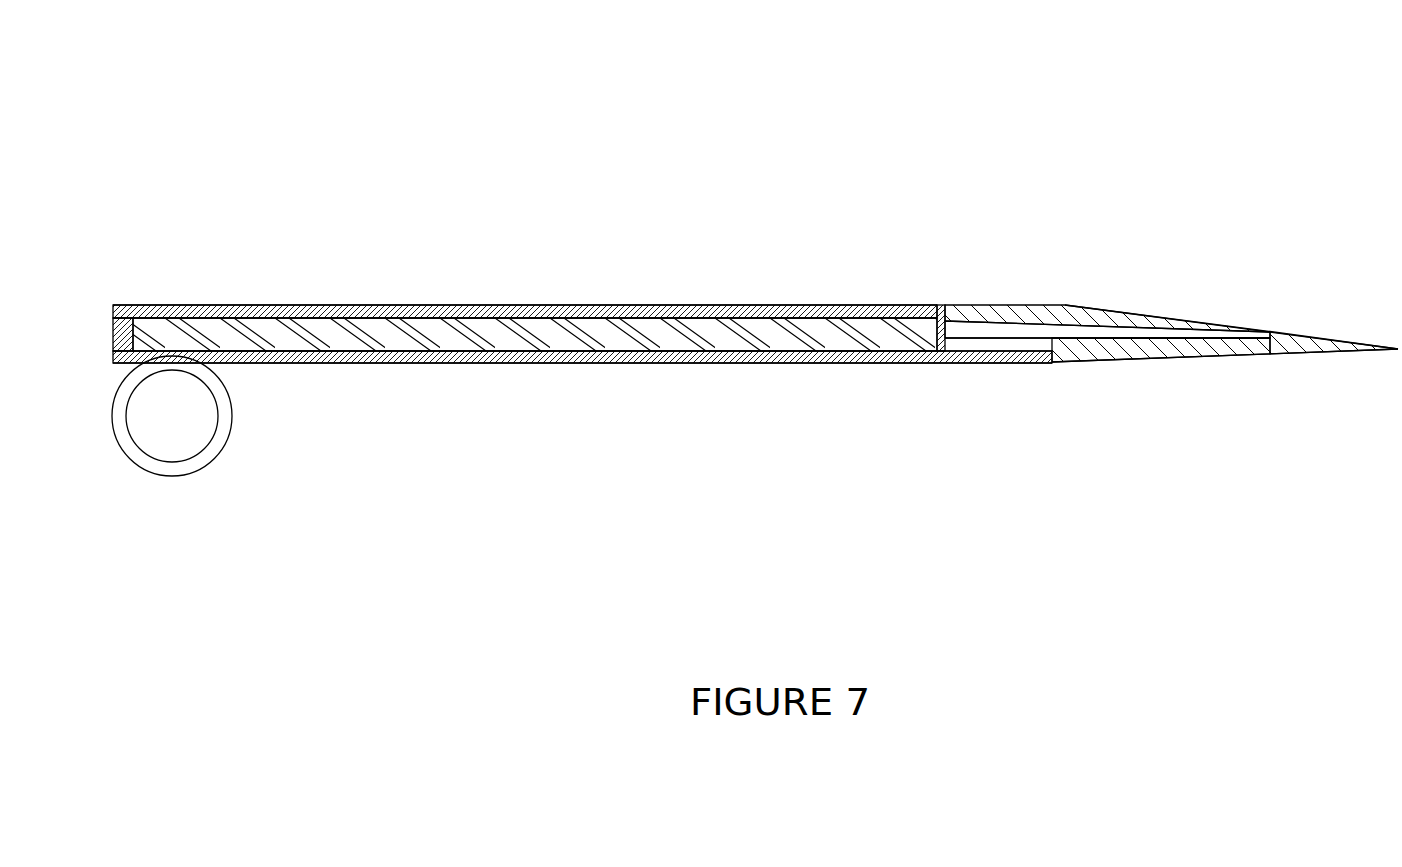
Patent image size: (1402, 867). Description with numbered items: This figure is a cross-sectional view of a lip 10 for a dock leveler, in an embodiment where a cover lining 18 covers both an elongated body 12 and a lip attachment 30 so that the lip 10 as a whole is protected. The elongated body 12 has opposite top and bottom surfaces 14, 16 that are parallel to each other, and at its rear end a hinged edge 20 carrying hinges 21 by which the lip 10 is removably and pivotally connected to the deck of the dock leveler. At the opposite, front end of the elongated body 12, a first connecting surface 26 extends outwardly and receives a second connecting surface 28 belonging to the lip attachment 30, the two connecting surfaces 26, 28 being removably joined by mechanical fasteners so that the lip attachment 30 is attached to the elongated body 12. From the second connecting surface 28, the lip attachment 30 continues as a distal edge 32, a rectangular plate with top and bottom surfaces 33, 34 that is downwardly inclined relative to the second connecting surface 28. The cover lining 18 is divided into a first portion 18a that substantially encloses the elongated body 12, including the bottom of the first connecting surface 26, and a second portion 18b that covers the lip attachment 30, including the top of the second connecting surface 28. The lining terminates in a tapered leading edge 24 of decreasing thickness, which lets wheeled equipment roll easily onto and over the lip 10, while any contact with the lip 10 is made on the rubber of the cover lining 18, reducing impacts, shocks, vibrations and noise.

The lip 10 is at (1287, 140).
The elongated body 12 is at (345, 333).
The top surface 14 is at (737, 311).
The bottom surface 16 is at (458, 355).
The cover lining 18 is at (770, 355).
The first portion of the cover lining 18a is at (481, 313).
The second portion of the cover lining 18b is at (1055, 313).
The hinged edge 20 is at (122, 322).
The hinge 21 is at (183, 468).
The leading edge 24 is at (1335, 345).
The first connecting surface 26 is at (965, 342).
The second connecting surface 28 is at (977, 328).
The lip attachment 30 is at (1300, 318).
The distal edge 32 is at (1160, 343).
The top surface of the distal edge 33 is at (1172, 318).
The bottom surface of the distal edge 34 is at (1178, 343).